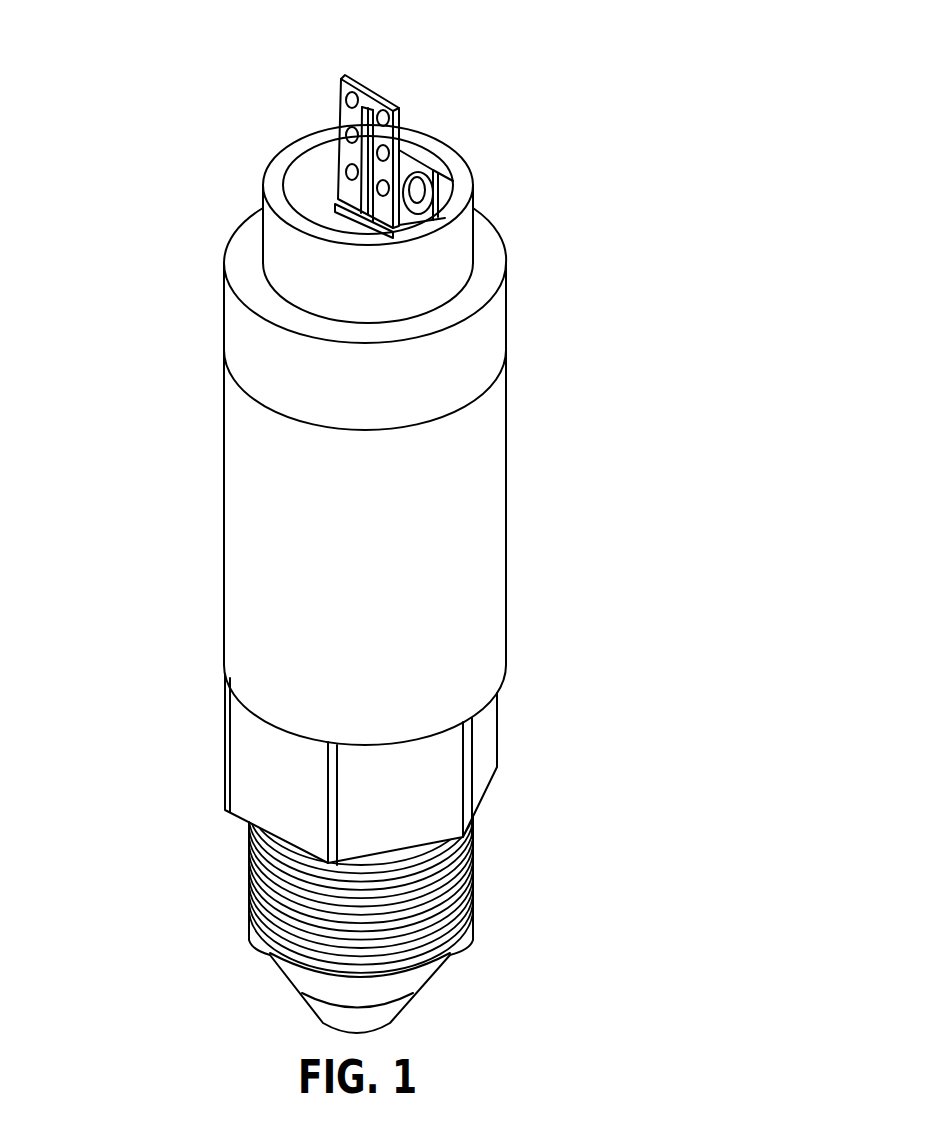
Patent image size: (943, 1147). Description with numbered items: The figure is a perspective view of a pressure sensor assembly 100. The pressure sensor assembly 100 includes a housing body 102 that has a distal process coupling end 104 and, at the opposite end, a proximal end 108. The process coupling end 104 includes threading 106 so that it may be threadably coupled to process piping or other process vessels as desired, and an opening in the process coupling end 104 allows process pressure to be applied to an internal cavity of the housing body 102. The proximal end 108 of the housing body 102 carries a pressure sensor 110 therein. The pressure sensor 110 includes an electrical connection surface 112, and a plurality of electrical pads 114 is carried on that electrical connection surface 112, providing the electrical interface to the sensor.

The pressure sensor assembly 100 is at (690, 137).
The housing body 102 is at (505, 470).
The process coupling end 104 is at (503, 872).
The threads 106 is at (248, 920).
The proximal end 108 is at (200, 292).
The pressure sensor 110 is at (364, 123).
The electrical connection surface 112 is at (343, 117).
The electrical pads 114 is at (378, 141).